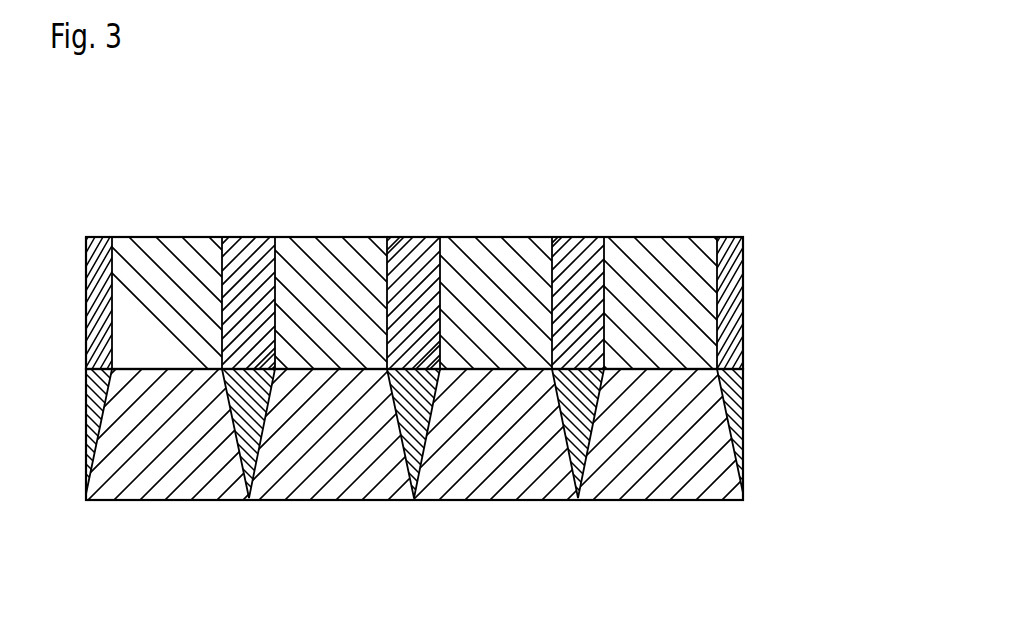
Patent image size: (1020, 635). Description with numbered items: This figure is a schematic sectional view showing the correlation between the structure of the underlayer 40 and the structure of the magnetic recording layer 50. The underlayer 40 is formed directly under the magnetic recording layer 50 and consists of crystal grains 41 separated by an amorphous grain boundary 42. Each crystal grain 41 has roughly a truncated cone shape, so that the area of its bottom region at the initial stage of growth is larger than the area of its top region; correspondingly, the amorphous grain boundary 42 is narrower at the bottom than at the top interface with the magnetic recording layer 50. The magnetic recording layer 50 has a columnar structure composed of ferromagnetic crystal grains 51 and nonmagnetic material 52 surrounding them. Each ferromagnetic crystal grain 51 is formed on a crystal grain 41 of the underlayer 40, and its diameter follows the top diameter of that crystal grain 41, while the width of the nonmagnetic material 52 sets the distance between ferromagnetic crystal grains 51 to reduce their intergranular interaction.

The underlayer 40 is at (762, 406).
The crystal grain 41 is at (472, 497).
The amorphous grain boundary 42 is at (241, 495).
The magnetic recording layer 50 is at (762, 284).
The ferromagnetic crystal grain 51 is at (311, 241).
The nonmagnetic material 52 is at (428, 240).